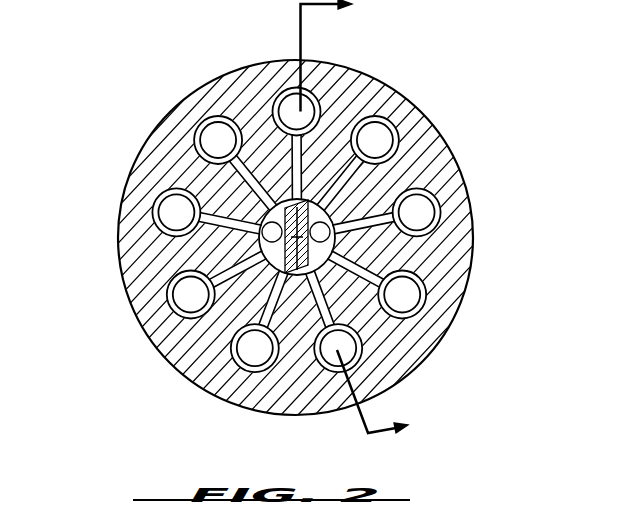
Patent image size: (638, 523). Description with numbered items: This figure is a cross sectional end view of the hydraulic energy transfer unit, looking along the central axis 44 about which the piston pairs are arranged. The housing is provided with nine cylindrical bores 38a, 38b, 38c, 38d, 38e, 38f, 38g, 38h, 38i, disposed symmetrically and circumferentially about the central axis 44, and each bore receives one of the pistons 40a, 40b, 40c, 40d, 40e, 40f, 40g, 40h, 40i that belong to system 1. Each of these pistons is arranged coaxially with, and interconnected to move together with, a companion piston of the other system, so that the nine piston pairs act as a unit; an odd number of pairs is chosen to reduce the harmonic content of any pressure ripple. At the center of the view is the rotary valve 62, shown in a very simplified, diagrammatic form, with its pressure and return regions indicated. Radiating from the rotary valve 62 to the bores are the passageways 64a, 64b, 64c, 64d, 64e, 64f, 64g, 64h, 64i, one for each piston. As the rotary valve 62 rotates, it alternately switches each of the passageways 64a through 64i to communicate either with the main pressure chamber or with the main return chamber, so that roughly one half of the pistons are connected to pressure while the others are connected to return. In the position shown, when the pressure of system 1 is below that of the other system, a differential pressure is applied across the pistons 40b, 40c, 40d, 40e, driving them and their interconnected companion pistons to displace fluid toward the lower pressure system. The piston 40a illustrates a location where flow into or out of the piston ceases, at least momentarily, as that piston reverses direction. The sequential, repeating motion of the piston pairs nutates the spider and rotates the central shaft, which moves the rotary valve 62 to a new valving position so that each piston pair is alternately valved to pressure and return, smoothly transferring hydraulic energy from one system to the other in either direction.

The system 1 is at (363, 222).
The central axis 44 is at (262, 240).
The rotary valve 62 is at (332, 245).
The cylindrical bore 38a is at (314, 88).
The cylindrical bore 38b is at (410, 114).
The cylindrical bore 38c is at (446, 194).
The cylindrical bore 38d is at (426, 287).
The cylindrical bore 38e is at (392, 382).
The cylindrical bore 38f is at (231, 373).
The cylindrical bore 38g is at (166, 302).
The cylindrical bore 38h is at (162, 189).
The cylindrical bore 38i is at (225, 114).
The piston 40a is at (289, 96).
The piston 40b is at (393, 144).
The piston 40c is at (432, 226).
The piston 40d is at (418, 310).
The piston 40e is at (327, 366).
The piston 40f is at (252, 366).
The piston 40g is at (179, 307).
The piston 40h is at (160, 209).
The piston 40i is at (209, 126).
The passageway 64a is at (308, 150).
The passageway 64b is at (338, 185).
The passageway 64c is at (360, 214).
The passageway 64d is at (372, 273).
The passageway 64e is at (330, 300).
The passageway 64f is at (273, 305).
The passageway 64g is at (244, 279).
The passageway 64h is at (235, 213).
The passageway 64i is at (262, 186).